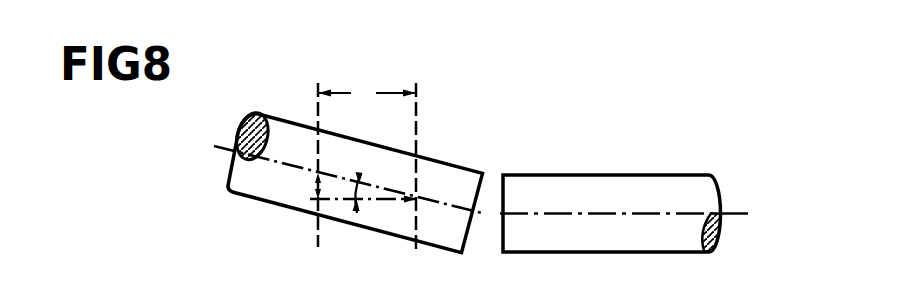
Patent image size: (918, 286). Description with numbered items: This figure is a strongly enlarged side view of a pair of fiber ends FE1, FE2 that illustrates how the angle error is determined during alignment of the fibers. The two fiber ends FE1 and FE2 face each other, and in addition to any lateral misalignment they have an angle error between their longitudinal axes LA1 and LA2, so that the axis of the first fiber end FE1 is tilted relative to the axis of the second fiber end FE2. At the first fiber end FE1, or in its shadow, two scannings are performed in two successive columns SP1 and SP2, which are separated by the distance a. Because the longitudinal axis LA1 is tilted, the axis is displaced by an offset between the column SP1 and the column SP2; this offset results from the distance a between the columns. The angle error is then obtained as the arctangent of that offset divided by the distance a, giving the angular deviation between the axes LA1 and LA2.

The fiber end FE1 is at (277, 132).
The fiber end FE2 is at (633, 197).
The longitudinal axis LA1 is at (214, 143).
The longitudinal axis LA2 is at (737, 213).
The column SP1 is at (297, 144).
The column SP2 is at (430, 146).
The distance a is at (367, 93).